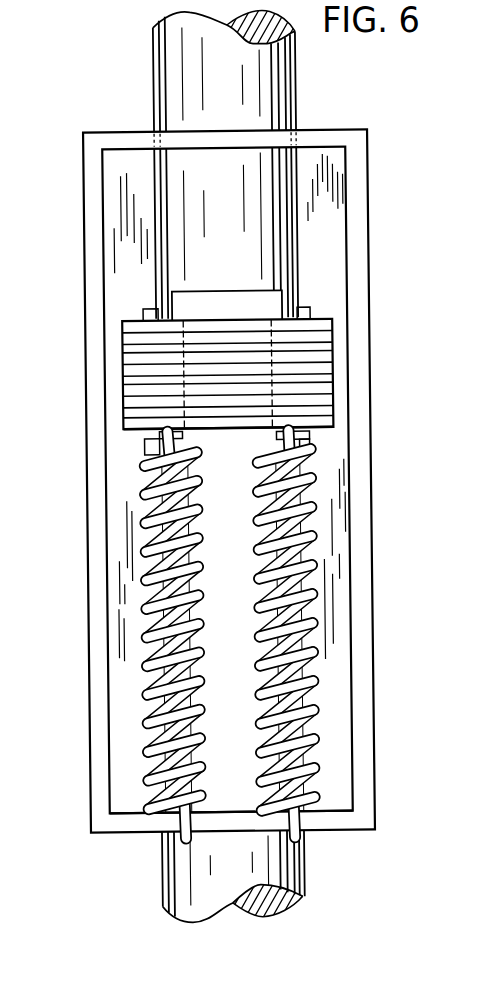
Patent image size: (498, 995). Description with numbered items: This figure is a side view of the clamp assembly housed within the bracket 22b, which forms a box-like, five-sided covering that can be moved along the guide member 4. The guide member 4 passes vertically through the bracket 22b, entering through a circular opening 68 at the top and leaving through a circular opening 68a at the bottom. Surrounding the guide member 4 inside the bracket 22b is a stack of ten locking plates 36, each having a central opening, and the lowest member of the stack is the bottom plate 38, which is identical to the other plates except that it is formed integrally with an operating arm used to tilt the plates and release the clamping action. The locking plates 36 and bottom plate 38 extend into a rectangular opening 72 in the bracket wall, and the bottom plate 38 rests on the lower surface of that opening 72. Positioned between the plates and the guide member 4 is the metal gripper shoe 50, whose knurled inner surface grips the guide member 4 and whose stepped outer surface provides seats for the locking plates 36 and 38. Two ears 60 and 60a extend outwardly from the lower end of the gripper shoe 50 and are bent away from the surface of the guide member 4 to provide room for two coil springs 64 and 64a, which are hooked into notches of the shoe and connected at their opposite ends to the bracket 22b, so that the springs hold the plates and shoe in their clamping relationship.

The guide member 4 is at (280, 97).
The bracket 22b is at (361, 667).
The locking plates 36 is at (329, 362).
The bottom plate 38 is at (129, 424).
The gripper shoe 50 is at (224, 302).
The ear 60 is at (153, 447).
The ear 60a is at (312, 441).
The coil spring 64 is at (143, 573).
The coil spring 64a is at (313, 577).
The circular opening 68 is at (152, 143).
The circular opening 68a is at (153, 820).
The rectangular opening 72 is at (305, 308).